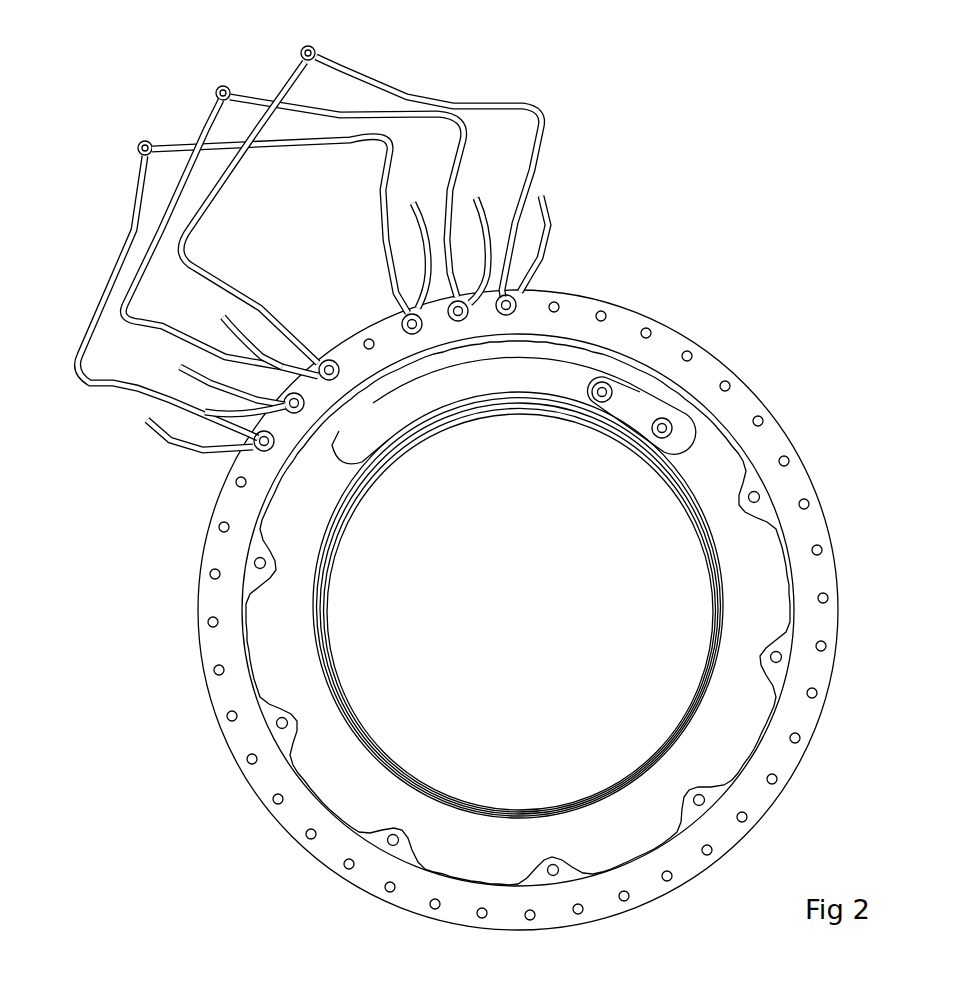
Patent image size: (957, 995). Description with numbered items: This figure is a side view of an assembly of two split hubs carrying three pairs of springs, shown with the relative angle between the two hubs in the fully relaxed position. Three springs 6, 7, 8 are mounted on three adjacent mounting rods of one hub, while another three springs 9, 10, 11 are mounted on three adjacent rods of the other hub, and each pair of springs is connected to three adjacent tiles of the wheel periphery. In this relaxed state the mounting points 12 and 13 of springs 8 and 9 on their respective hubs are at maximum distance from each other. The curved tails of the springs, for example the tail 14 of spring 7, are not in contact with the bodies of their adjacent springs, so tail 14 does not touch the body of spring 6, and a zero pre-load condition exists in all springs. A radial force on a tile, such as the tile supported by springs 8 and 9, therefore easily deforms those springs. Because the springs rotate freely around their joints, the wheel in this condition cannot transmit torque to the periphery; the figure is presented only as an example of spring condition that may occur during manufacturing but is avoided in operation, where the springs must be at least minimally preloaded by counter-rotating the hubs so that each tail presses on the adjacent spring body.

The spring 6 is at (364, 213).
The spring 7 is at (375, 220).
The spring 8 is at (239, 318).
The spring 9 is at (132, 210).
The spring 10 is at (197, 163).
The spring 11 is at (237, 180).
The mounting point 12 is at (397, 330).
The mounting point 13 is at (256, 444).
The curved tail 14 is at (483, 200).